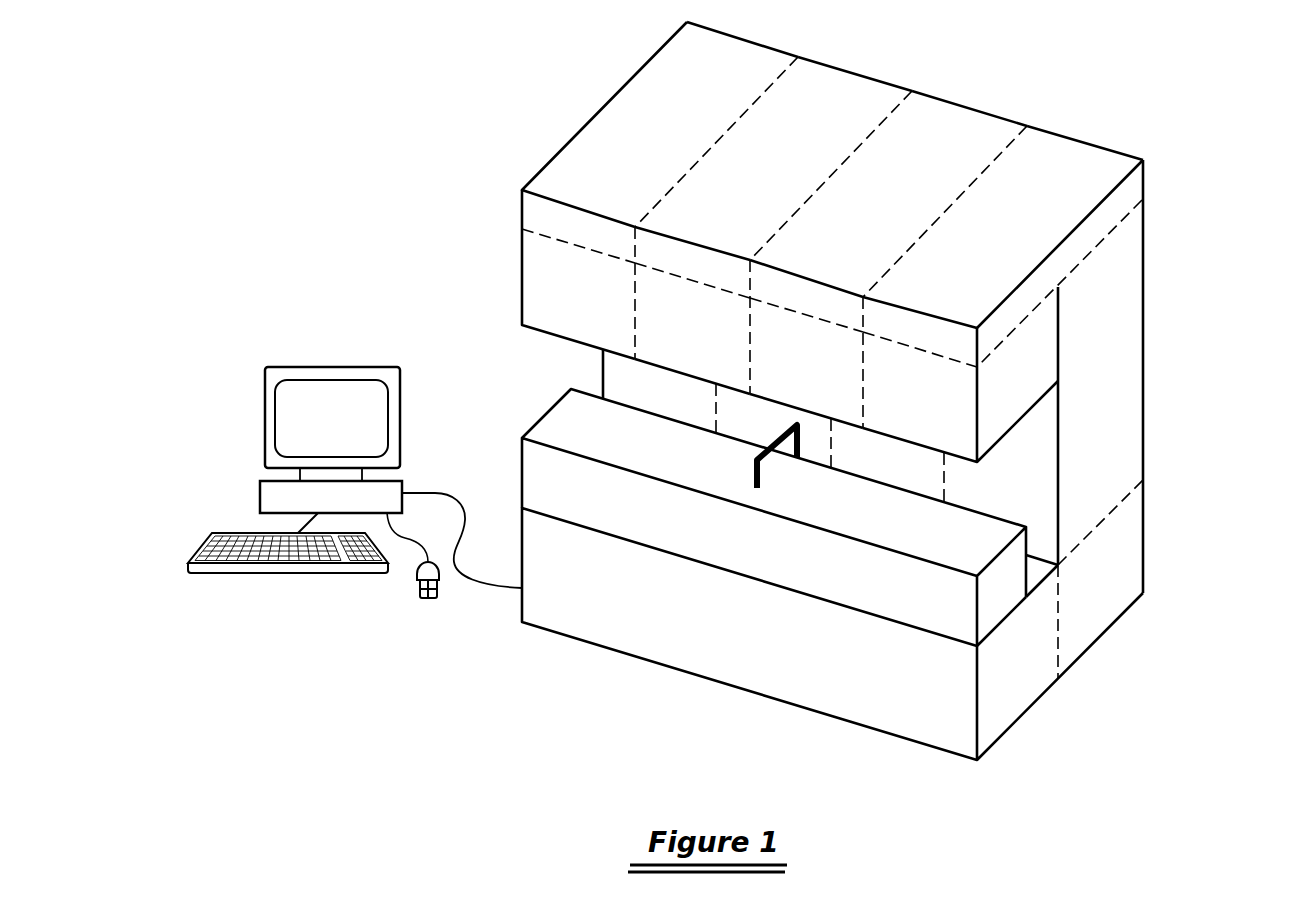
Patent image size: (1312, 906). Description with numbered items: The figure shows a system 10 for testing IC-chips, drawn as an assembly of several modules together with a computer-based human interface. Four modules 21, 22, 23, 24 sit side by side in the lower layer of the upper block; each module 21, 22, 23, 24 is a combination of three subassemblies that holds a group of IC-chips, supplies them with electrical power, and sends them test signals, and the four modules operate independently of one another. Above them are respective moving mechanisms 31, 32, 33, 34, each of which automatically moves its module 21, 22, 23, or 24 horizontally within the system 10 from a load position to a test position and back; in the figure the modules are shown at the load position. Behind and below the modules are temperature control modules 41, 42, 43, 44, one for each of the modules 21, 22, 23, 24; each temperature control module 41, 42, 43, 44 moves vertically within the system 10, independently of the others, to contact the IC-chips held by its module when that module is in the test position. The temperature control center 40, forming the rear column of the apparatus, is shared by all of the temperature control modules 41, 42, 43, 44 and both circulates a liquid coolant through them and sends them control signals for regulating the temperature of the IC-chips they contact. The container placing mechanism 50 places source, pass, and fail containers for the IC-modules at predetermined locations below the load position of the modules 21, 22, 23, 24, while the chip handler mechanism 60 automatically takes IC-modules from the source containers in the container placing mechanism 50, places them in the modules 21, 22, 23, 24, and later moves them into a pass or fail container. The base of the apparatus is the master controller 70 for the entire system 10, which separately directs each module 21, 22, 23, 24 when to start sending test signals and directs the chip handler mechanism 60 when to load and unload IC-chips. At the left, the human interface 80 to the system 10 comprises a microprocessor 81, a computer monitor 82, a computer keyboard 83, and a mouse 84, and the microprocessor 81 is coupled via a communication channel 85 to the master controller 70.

The system 10 is at (1233, 77).
The module 21 is at (932, 397).
The module 22 is at (824, 368).
The module 23 is at (712, 334).
The module 24 is at (592, 299).
The moving mechanism 31 is at (1009, 247).
The moving mechanism 32 is at (896, 212).
The moving mechanism 33 is at (779, 176).
The moving mechanism 34 is at (671, 137).
The temperature control center 40 is at (1126, 581).
The temperature control module 41 is at (1022, 499).
The temperature control module 42 is at (906, 471).
The temperature control module 43 is at (784, 434).
The temperature control module 44 is at (677, 407).
The container placing mechanism 50 is at (856, 583).
The chip handler mechanism 60 is at (757, 456).
The master controller 70 is at (801, 647).
The human interface 80 is at (240, 327).
The microprocessor 81 is at (259, 490).
The computer monitor 82 is at (265, 418).
The computer keyboard 83 is at (200, 550).
The mouse 84 is at (415, 577).
The communication channel 85 is at (481, 584).